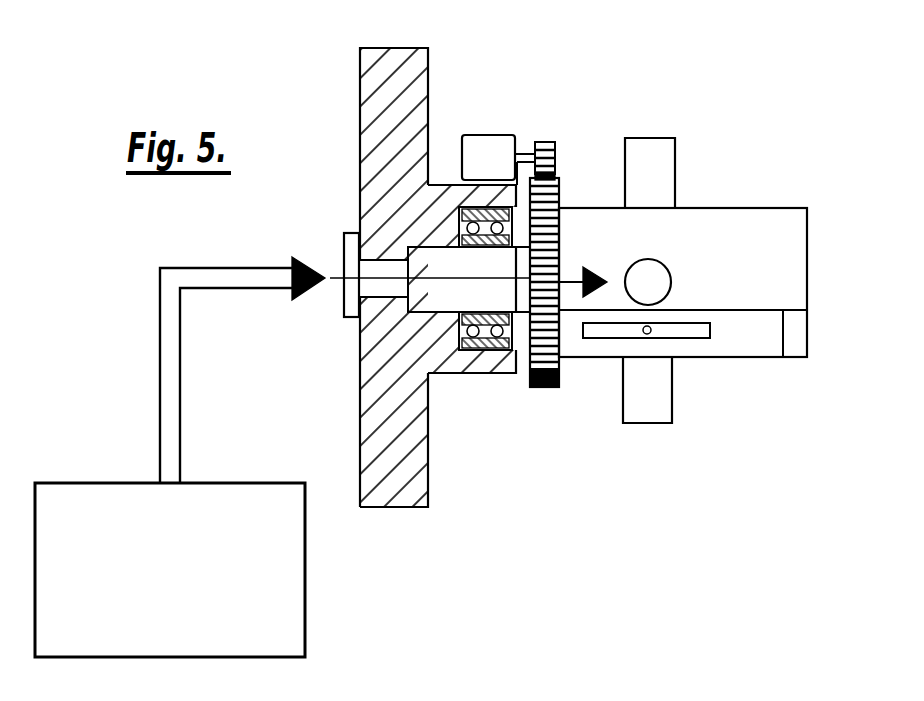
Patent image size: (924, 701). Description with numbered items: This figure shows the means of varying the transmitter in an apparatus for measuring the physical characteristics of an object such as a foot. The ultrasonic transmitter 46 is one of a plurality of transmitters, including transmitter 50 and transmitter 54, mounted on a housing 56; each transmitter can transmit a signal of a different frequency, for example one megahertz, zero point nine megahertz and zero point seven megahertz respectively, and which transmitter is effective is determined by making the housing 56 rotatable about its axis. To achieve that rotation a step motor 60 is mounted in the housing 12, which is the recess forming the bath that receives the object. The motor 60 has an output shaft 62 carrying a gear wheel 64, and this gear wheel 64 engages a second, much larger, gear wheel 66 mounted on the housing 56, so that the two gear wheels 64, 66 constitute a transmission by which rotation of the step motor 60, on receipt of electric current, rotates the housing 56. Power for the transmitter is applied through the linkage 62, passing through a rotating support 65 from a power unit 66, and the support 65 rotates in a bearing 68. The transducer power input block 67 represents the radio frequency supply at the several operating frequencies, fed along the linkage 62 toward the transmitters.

The bath 12 is at (412, 78).
The ultrasonic transmitter 46 is at (655, 276).
The transmitter 50 is at (664, 156).
The transmitter 54 is at (660, 388).
The housing 56 is at (740, 208).
The step motor 60 is at (493, 146).
The output shaft 62 is at (522, 158).
The gear wheel 64 is at (556, 164).
The rotating support 65 is at (348, 304).
The gear wheel 66 is at (542, 388).
The transducer power input 67 is at (295, 582).
The bearing 68 is at (493, 352).